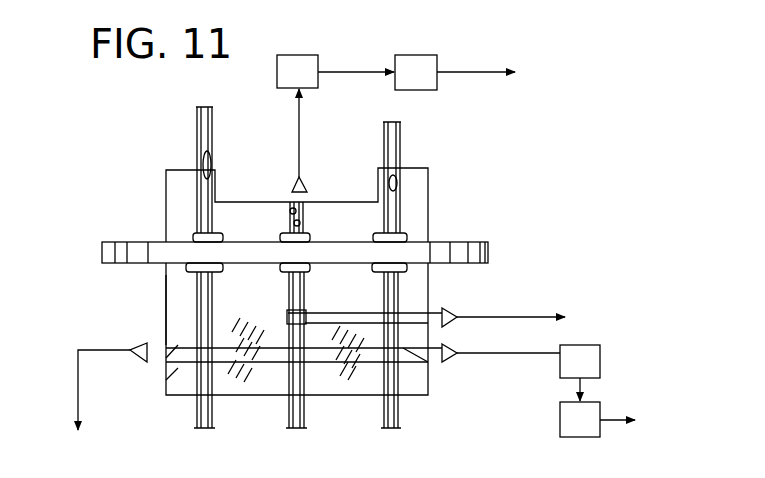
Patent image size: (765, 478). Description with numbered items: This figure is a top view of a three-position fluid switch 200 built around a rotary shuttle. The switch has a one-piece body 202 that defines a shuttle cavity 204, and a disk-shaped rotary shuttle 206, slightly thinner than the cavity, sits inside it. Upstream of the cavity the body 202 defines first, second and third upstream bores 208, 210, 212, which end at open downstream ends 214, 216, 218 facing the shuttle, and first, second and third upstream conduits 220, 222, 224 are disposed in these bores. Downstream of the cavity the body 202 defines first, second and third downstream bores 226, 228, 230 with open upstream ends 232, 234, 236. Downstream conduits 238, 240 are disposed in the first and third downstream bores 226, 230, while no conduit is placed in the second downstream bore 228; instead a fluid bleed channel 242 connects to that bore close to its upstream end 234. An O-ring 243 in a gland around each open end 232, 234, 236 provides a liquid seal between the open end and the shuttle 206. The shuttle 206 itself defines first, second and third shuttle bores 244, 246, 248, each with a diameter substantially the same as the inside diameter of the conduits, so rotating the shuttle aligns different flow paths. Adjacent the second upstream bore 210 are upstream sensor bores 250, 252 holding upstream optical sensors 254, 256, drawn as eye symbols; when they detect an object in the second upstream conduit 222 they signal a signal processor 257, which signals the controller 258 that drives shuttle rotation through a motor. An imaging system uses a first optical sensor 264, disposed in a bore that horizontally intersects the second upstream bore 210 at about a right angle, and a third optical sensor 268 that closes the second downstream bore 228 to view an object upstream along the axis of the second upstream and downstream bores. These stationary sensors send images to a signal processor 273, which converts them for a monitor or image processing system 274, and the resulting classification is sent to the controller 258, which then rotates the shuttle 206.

The fluid switch 200 is at (547, 221).
The body 202 is at (166, 393).
The shuttle cavity 204 is at (160, 278).
The rotary shuttle 206 is at (472, 241).
The first upstream bore 208 is at (212, 381).
The second upstream bore 210 is at (304, 382).
The third upstream bore 212 is at (393, 381).
The open downstream end of first upstream bore 214 is at (192, 274).
The open downstream end of second upstream bore 216 is at (304, 274).
The open downstream end of third upstream bore 218 is at (398, 275).
The first upstream conduit 220 is at (195, 408).
The second upstream conduit 222 is at (288, 414).
The third upstream conduit 224 is at (400, 413).
The first downstream bore 226 is at (209, 165).
The second downstream bore 228 is at (290, 206).
The third downstream bore 230 is at (398, 172).
The open upstream end of first downstream bore 232 is at (197, 224).
The open upstream end of second downstream bore 234 is at (290, 230).
The open upstream end of third downstream bore 236 is at (399, 228).
The first downstream conduit 238 is at (197, 129).
The third downstream conduit 240 is at (384, 135).
The fluid bleed channel 242 is at (304, 232).
The O-ring 243 is at (194, 238).
The first shuttle bore 244 is at (205, 253).
The second shuttle bore 246 is at (290, 254).
The third shuttle bore 248 is at (385, 250).
The upstream sensor bore 250 is at (166, 368).
The upstream sensor bore 252 is at (404, 349).
The upstream optical sensor 254 is at (133, 349).
The upstream optical sensor 256 is at (458, 350).
The signal processor 257 is at (600, 362).
The controller 258 is at (560, 422).
The first optical sensor 264 is at (458, 313).
The third optical sensor 268 is at (302, 186).
The signal processor 273 is at (297, 55).
The monitor or image processing system 274 is at (418, 55).